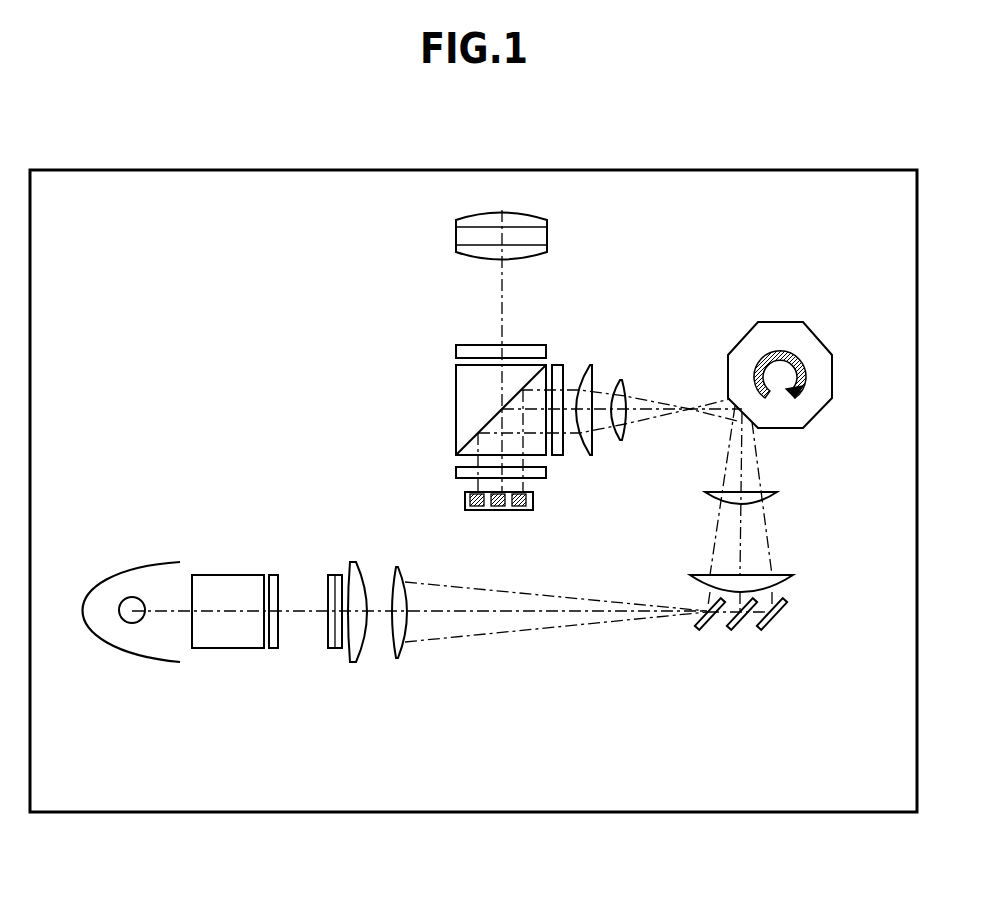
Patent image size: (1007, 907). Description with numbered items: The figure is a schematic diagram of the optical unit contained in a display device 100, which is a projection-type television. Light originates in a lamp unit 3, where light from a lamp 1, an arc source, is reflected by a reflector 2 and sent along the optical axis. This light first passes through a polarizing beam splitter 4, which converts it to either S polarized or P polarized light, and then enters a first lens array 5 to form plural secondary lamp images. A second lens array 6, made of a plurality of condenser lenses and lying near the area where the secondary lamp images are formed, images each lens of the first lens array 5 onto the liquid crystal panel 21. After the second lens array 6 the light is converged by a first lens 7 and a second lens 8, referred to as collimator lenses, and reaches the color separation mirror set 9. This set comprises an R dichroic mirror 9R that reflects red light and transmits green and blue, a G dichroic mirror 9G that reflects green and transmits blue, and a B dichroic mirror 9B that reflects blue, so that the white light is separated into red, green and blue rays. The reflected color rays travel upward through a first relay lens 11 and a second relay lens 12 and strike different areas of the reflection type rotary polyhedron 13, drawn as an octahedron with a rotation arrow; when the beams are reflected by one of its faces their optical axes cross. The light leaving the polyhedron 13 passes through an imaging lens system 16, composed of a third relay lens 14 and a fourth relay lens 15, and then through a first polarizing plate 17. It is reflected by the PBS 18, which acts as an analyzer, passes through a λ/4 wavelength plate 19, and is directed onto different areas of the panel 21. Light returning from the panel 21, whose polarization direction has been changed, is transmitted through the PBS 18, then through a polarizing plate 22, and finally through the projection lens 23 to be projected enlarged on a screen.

The lamp 1 is at (147, 596).
The reflector 2 is at (118, 580).
The lamp unit 3 is at (134, 631).
The polarizing beam splitter 4 is at (225, 575).
The first lens array 5 is at (275, 575).
The second lens array 6 is at (335, 575).
The first lens 7 is at (357, 562).
The second lens 8 is at (400, 567).
The color separation mirror set 9 is at (730, 687).
The R dichroic mirror 9R is at (697, 632).
The G dichroic mirror 9G is at (729, 632).
The B dichroic mirror 9B is at (768, 647).
The first relay lens 11 is at (793, 579).
The second relay lens 12 is at (777, 496).
The reflection type rotary polyhedron 13 is at (793, 330).
The third relay lens 14 is at (617, 380).
The fourth relay lens 15 is at (588, 365).
The imaging lens system 16 is at (610, 350).
The first polarizing plate 17 is at (557, 365).
The PBS 18 is at (456, 393).
The λ/4 wavelength plate 19 is at (456, 472).
The liquid crystal panel 21 is at (533, 503).
The polarizing plate 22 is at (456, 350).
The projection lens 23 is at (456, 233).
The display device 100 is at (745, 813).